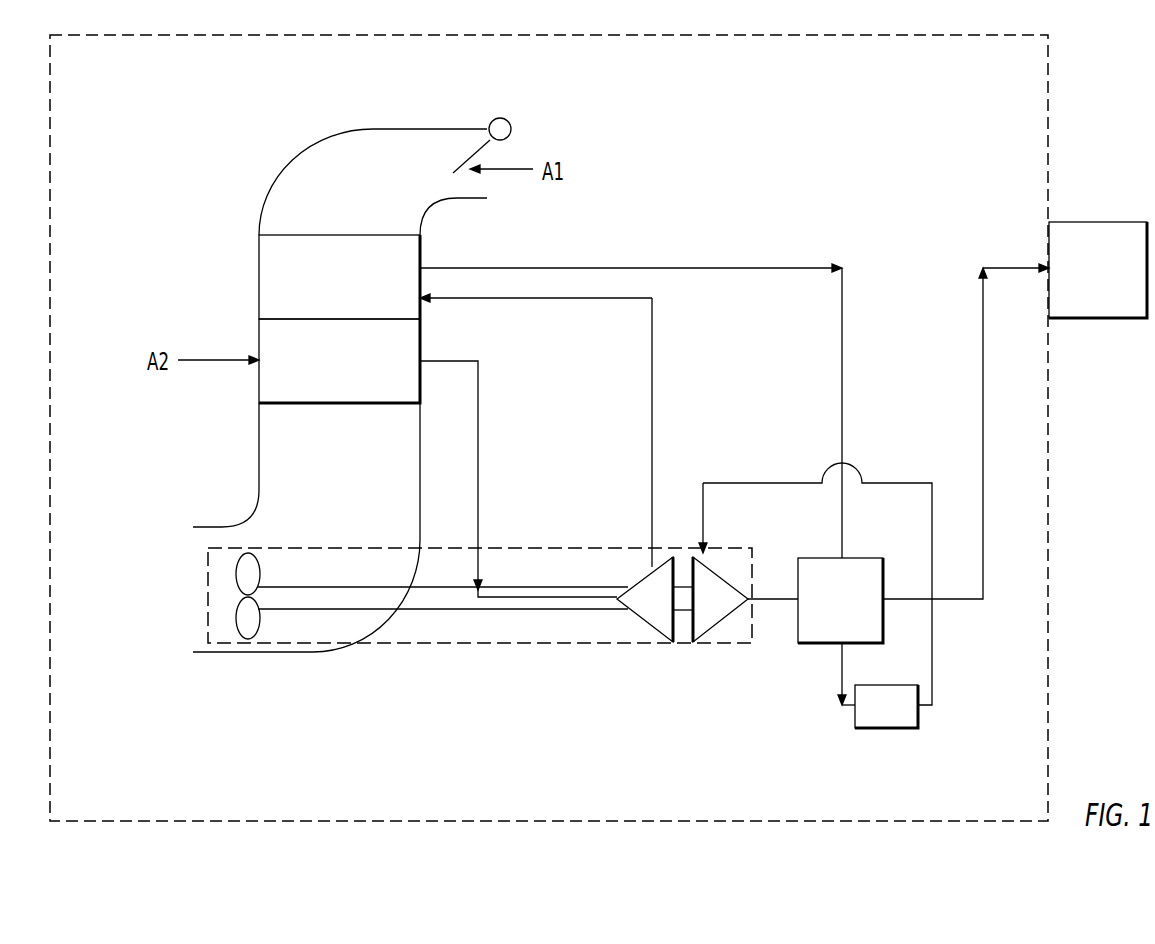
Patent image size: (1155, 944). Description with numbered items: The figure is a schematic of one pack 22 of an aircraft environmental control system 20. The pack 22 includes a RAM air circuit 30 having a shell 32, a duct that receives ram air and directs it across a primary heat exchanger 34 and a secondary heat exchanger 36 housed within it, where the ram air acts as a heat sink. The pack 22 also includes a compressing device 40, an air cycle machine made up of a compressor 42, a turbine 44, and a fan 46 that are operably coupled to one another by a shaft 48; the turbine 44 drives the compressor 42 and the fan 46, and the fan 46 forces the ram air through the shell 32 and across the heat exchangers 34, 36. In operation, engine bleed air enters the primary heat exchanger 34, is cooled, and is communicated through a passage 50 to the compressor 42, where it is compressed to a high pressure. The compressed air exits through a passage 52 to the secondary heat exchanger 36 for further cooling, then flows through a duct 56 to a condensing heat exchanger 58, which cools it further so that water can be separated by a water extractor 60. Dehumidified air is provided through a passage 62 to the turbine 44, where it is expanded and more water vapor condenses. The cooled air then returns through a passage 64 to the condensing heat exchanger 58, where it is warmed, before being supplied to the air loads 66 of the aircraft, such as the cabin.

The environmental control system 20 is at (1055, 105).
The pack 22 is at (734, 188).
The RAM air circuit 30 is at (212, 503).
The shell 32 is at (308, 146).
The primary heat exchanger 34 is at (339, 361).
The secondary heat exchanger 36 is at (339, 277).
The compressing device 40 is at (493, 655).
The compressor 42 is at (655, 630).
The turbine 44 is at (705, 632).
The fan 46 is at (247, 632).
The shaft 48 is at (437, 598).
The passage 50 is at (478, 437).
The passage 52 is at (652, 432).
The duct 56 is at (840, 378).
The condensing heat exchanger 58 is at (858, 556).
The water extractor 60 is at (880, 730).
The passage 62 is at (752, 483).
The passage 64 is at (790, 600).
The air loads 66 is at (1065, 270).